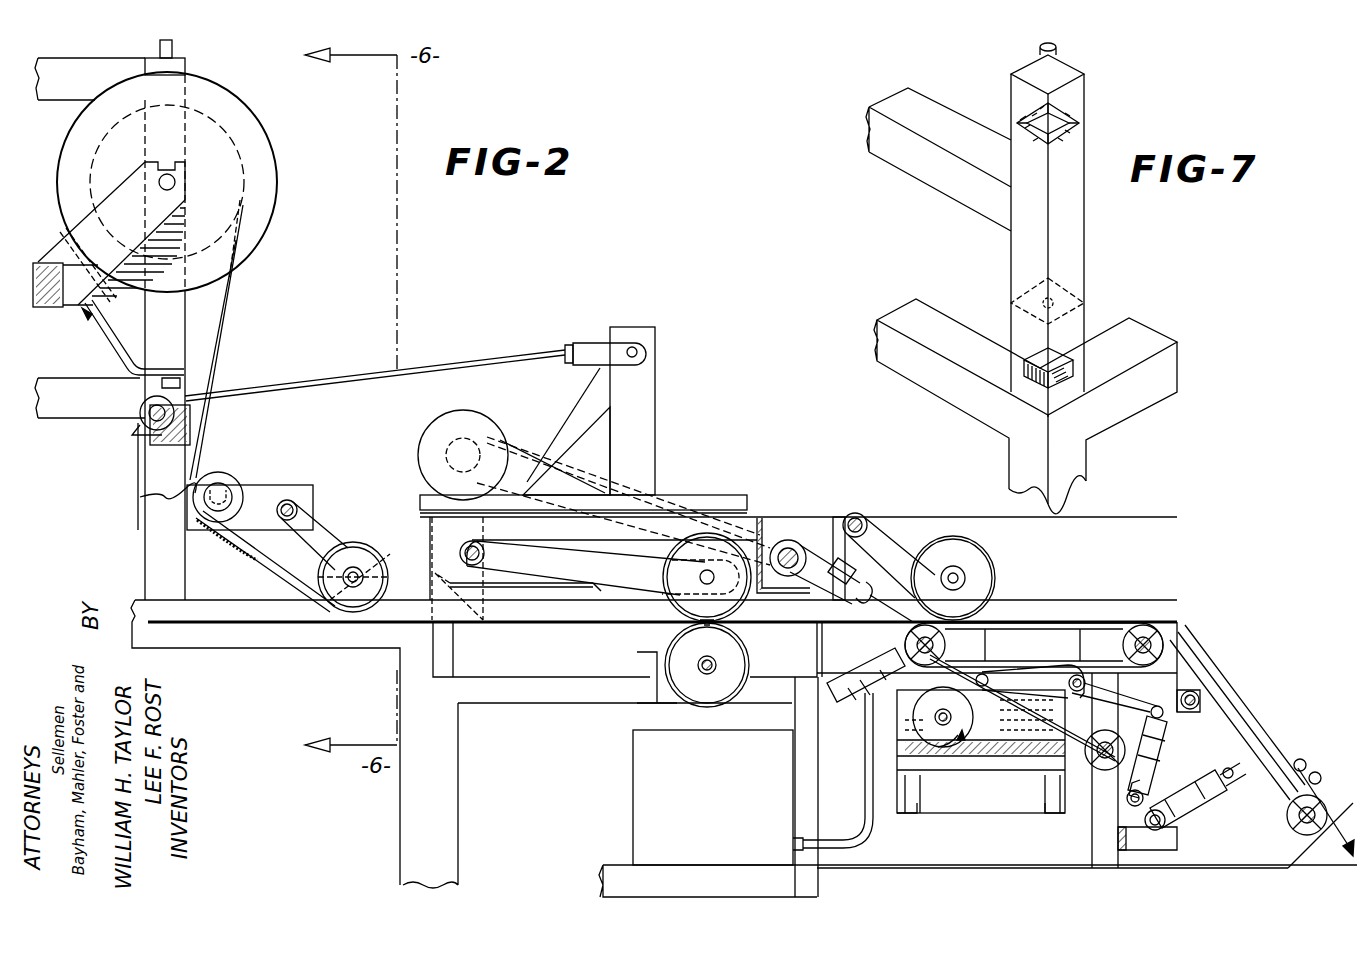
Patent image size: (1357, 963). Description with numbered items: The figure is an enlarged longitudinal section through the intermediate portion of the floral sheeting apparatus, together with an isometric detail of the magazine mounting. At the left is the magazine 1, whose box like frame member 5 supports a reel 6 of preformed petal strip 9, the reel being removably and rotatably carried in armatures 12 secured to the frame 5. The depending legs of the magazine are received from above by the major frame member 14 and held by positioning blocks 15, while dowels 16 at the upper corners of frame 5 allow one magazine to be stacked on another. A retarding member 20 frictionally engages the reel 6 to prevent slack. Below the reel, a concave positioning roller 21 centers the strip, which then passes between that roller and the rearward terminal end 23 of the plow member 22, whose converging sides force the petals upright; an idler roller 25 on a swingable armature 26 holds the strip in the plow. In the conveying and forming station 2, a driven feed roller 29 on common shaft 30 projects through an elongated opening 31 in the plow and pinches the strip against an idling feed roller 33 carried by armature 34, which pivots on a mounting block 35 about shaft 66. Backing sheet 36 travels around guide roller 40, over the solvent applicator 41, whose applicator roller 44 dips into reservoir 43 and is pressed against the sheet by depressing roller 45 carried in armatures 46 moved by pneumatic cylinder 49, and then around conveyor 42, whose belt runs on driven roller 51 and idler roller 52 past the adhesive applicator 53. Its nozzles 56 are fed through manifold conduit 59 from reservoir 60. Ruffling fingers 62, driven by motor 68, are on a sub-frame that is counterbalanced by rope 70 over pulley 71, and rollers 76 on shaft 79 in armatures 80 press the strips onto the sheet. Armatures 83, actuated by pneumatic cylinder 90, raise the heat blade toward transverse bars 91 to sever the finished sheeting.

In FIG. 2, the magazine 1 is at (194, 182).
In FIG. 2, the petal strip conveying and forming station 2 is at (280, 470).
In FIG. 2, the box like frame member 5 is at (75, 59).
In FIG. 7, the box like frame member 5 is at (923, 179).
In FIG. 2, the reel 6 is at (238, 105).
In FIG. 2, the petal strip 9 is at (220, 342).
In FIG. 2, the armature 12 is at (120, 188).
In FIG. 2, the major frame member 14 is at (125, 540).
In FIG. 7, the major frame member 14 is at (912, 398).
In FIG. 7, the positioning block 15 is at (1060, 354).
In FIG. 2, the dowel 16 is at (160, 45).
In FIG. 7, the dowel 16 is at (1063, 52).
In FIG. 2, the retarding member 20 is at (108, 340).
In FIG. 2, the positioning roller 21 is at (220, 478).
In FIG. 2, the plow member 22 is at (260, 568).
In FIG. 2, the rearward terminal end 23 is at (140, 497).
In FIG. 2, the idler roller 25 is at (386, 554).
In FIG. 2, the swingable armature 26 is at (312, 528).
In FIG. 2, the driven feed roller 29 is at (744, 650).
In FIG. 2, the common shaft 30 is at (700, 673).
In FIG. 2, the elongated opening 31 is at (683, 630).
In FIG. 2, the idling feed roller 33 is at (665, 560).
In FIG. 2, the armature 34 is at (570, 558).
In FIG. 2, the mounting block 35 is at (420, 587).
In FIG. 2, the backing sheet 36 is at (1085, 822).
In FIG. 2, the guide roller 40 is at (1097, 768).
In FIG. 2, the solvent applicator 41 is at (982, 794).
In FIG. 2, the conveyor 42 is at (1104, 620).
In FIG. 2, the reservoir 43 is at (1018, 760).
In FIG. 2, the applicator roller 44 is at (960, 759).
In FIG. 2, the depressing roller 45 is at (984, 675).
In FIG. 2, the armature 46 is at (1032, 679).
In FIG. 2, the pneumatic cylinder 49 is at (1160, 757).
In FIG. 2, the driven roller 51 is at (941, 644).
In FIG. 2, the idler roller 52 is at (1153, 630).
In FIG. 2, the adhesive applicator 53 is at (858, 695).
In FIG. 2, the nozzle 56 is at (866, 685).
In FIG. 2, the manifold conduit 59 is at (862, 834).
In FIG. 2, the reservoir 60 is at (713, 797).
In FIG. 2, the ruffling finger 62 is at (818, 540).
In FIG. 2, the shaft 66 is at (468, 546).
In FIG. 2, the motor 68 is at (473, 418).
In FIG. 2, the rope 70 is at (329, 377).
In FIG. 2, the pulley 71 is at (136, 433).
In FIG. 2, the roller 76 is at (985, 562).
In FIG. 2, the shaft 79 is at (956, 574).
In FIG. 2, the armature 80 is at (881, 532).
In FIG. 2, the armature 83 is at (1227, 722).
In FIG. 2, the pneumatic cylinder 90 is at (1180, 813).
In FIG. 2, the transverse bar 91 is at (1318, 767).